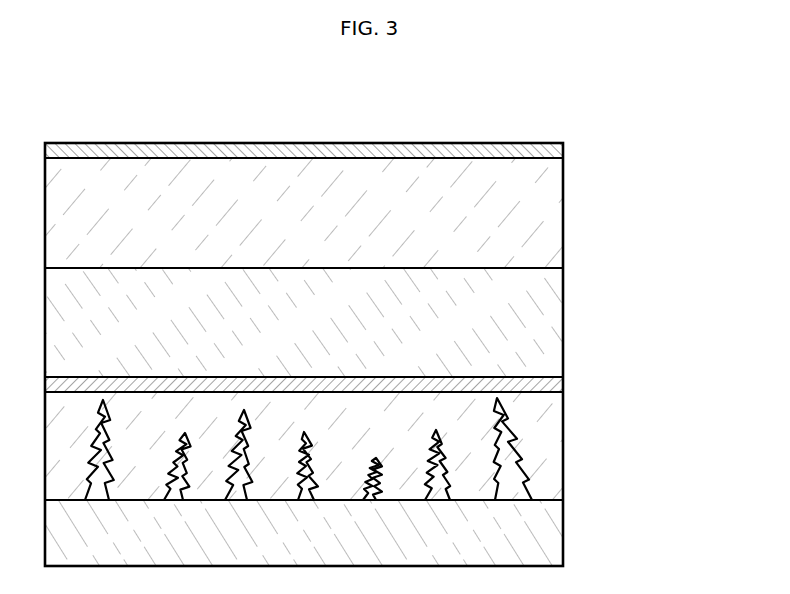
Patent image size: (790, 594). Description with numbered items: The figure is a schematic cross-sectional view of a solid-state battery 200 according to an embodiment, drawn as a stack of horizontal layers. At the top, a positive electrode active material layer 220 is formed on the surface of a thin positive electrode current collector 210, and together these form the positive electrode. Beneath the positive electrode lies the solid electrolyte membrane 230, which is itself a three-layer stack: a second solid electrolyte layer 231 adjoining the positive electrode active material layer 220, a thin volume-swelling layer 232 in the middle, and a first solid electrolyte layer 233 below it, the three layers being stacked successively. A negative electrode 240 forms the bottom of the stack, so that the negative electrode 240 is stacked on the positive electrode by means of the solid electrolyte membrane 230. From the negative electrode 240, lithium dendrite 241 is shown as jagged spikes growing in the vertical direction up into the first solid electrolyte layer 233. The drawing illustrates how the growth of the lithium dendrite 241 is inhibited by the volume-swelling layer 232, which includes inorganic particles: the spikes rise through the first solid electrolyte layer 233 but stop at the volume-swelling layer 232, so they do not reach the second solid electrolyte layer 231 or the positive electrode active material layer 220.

The solid-state battery 200 is at (124, 95).
The positive electrode current collector 210 is at (565, 152).
The positive electrode active material layer 220 is at (565, 215).
The solid electrolyte membrane 230 is at (373, 384).
The second solid electrolyte layer 231 is at (565, 320).
The volume-swelling layer 232 is at (565, 386).
The first solid electrolyte layer 233 is at (565, 421).
The negative electrode 240 is at (565, 537).
The lithium dendrite 241 is at (510, 455).